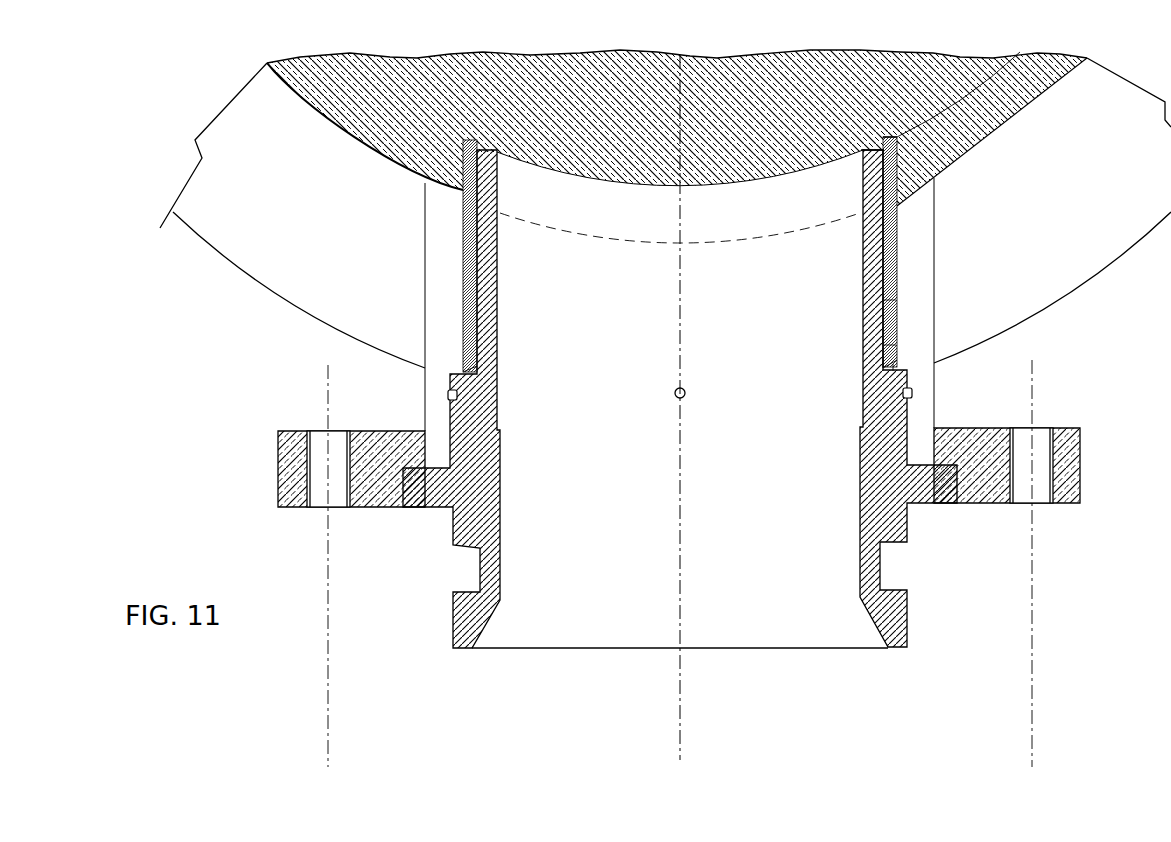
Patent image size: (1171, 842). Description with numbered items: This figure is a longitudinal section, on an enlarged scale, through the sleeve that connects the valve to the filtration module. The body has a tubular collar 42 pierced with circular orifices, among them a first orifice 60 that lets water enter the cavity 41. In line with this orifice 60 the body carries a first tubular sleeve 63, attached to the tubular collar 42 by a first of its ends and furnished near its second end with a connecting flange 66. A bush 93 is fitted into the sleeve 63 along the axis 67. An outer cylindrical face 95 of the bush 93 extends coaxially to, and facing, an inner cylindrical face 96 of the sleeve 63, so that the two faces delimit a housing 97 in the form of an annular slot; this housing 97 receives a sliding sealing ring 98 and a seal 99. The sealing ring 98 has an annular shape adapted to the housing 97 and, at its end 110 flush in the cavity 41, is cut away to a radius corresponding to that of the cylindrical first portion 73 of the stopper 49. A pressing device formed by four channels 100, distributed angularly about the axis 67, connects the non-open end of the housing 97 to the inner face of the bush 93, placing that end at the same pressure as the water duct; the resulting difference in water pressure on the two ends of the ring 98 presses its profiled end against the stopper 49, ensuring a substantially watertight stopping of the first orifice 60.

The cavity 41 is at (410, 101).
The tubular collar 42 is at (323, 121).
The stopper 49 is at (680, 228).
The first portion of the stopper 73 is at (580, 112).
The first orifice 60 is at (861, 150).
The first tubular sleeve 63 is at (935, 200).
The connecting flange 66 is at (1082, 465).
The axis 67 is at (682, 302).
The bush 93 is at (870, 502).
The outer cylindrical face 95 is at (884, 278).
The inner cylindrical face 96 is at (889, 246).
The housing 97 is at (470, 372).
The sliding sealing ring 98 is at (884, 320).
The seal 99 is at (881, 367).
The channels 100 is at (502, 393).
The end of the sealing ring 110 is at (880, 130).